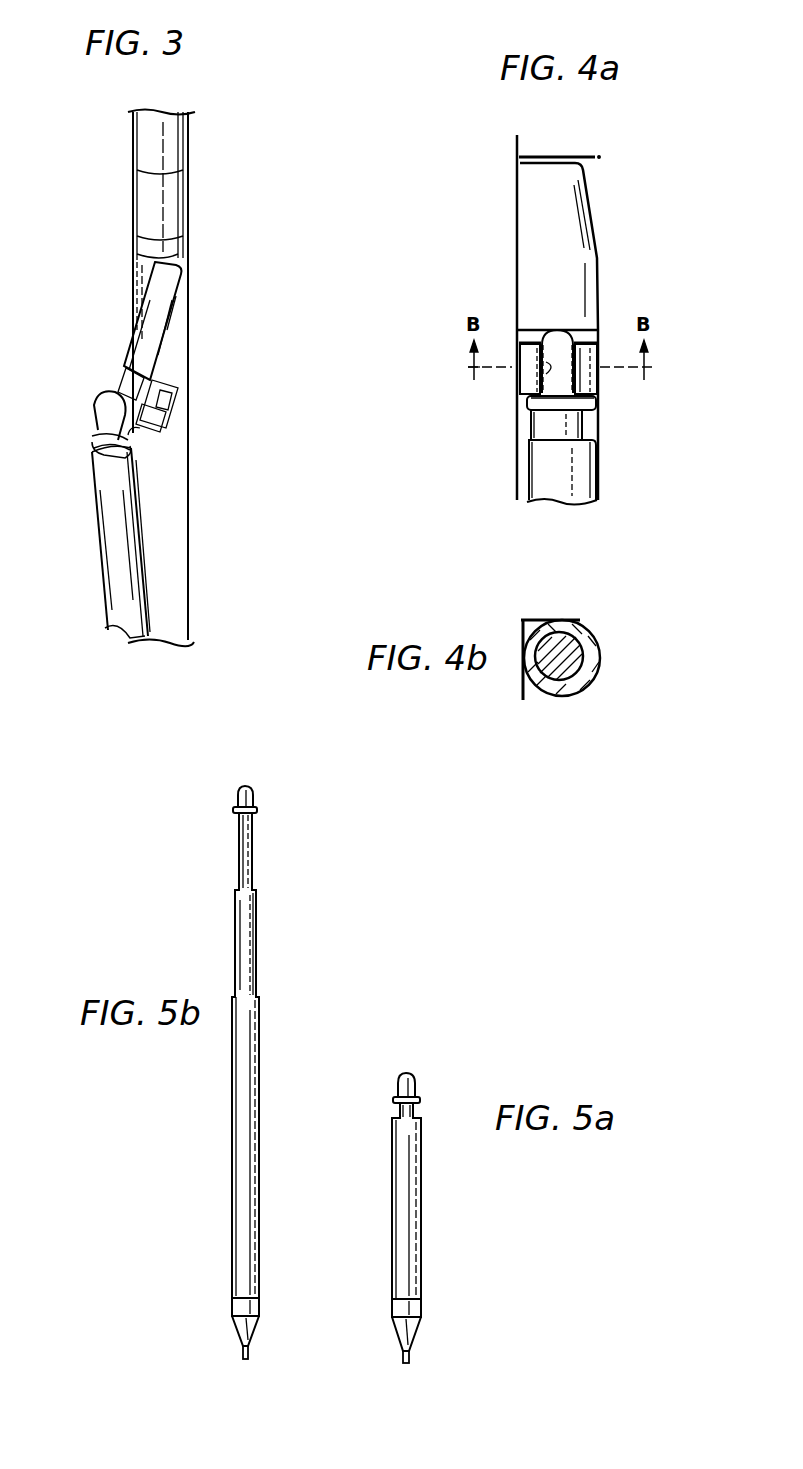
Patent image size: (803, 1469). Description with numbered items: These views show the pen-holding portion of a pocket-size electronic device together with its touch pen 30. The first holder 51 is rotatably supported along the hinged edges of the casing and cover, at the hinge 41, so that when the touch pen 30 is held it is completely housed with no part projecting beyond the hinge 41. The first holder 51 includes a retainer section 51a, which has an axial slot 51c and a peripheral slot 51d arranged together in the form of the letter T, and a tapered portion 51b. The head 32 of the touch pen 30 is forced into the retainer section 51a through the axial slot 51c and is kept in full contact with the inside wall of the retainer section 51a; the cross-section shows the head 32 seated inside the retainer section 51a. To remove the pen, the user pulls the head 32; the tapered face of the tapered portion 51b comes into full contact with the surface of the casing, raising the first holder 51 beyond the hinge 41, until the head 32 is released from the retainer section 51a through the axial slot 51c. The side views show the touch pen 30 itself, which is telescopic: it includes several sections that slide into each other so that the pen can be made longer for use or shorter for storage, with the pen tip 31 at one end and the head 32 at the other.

In FIG. 3, the touch pen 30 is at (146, 522).
In FIG. 4a, the touch pen 30 is at (540, 470).
In FIG. 5b, the touch pen 30 is at (223, 1164).
In FIG. 5a, the touch pen 30 is at (428, 1234).
In FIG. 5b, the pen tip 31 is at (241, 1355).
In FIG. 5a, the pen tip 31 is at (411, 1357).
In FIG. 3, the head 32 is at (105, 420).
In FIG. 4a, the head 32 is at (562, 328).
In FIG. 4b, the head 32 is at (568, 632).
In FIG. 5b, the head 32 is at (255, 795).
In FIG. 5a, the head 32 is at (415, 1080).
In FIG. 3, the hinge 41 is at (190, 204).
In FIG. 3, the first holder 51 is at (124, 336).
In FIG. 4a, the first holder 51 is at (511, 234).
In FIG. 3, the retainer section 51a is at (163, 408).
In FIG. 4a, the retainer section 51a is at (596, 378).
In FIG. 4b, the retainer section 51a is at (590, 678).
In FIG. 3, the tapered portion 51b is at (190, 320).
In FIG. 4a, the tapered portion 51b is at (590, 254).
In FIG. 3, the axial slot 51c is at (120, 383).
In FIG. 4a, the axial slot 51c is at (553, 374).
In FIG. 3, the peripheral slot 51d is at (186, 384).
In FIG. 4a, the peripheral slot 51d is at (530, 328).